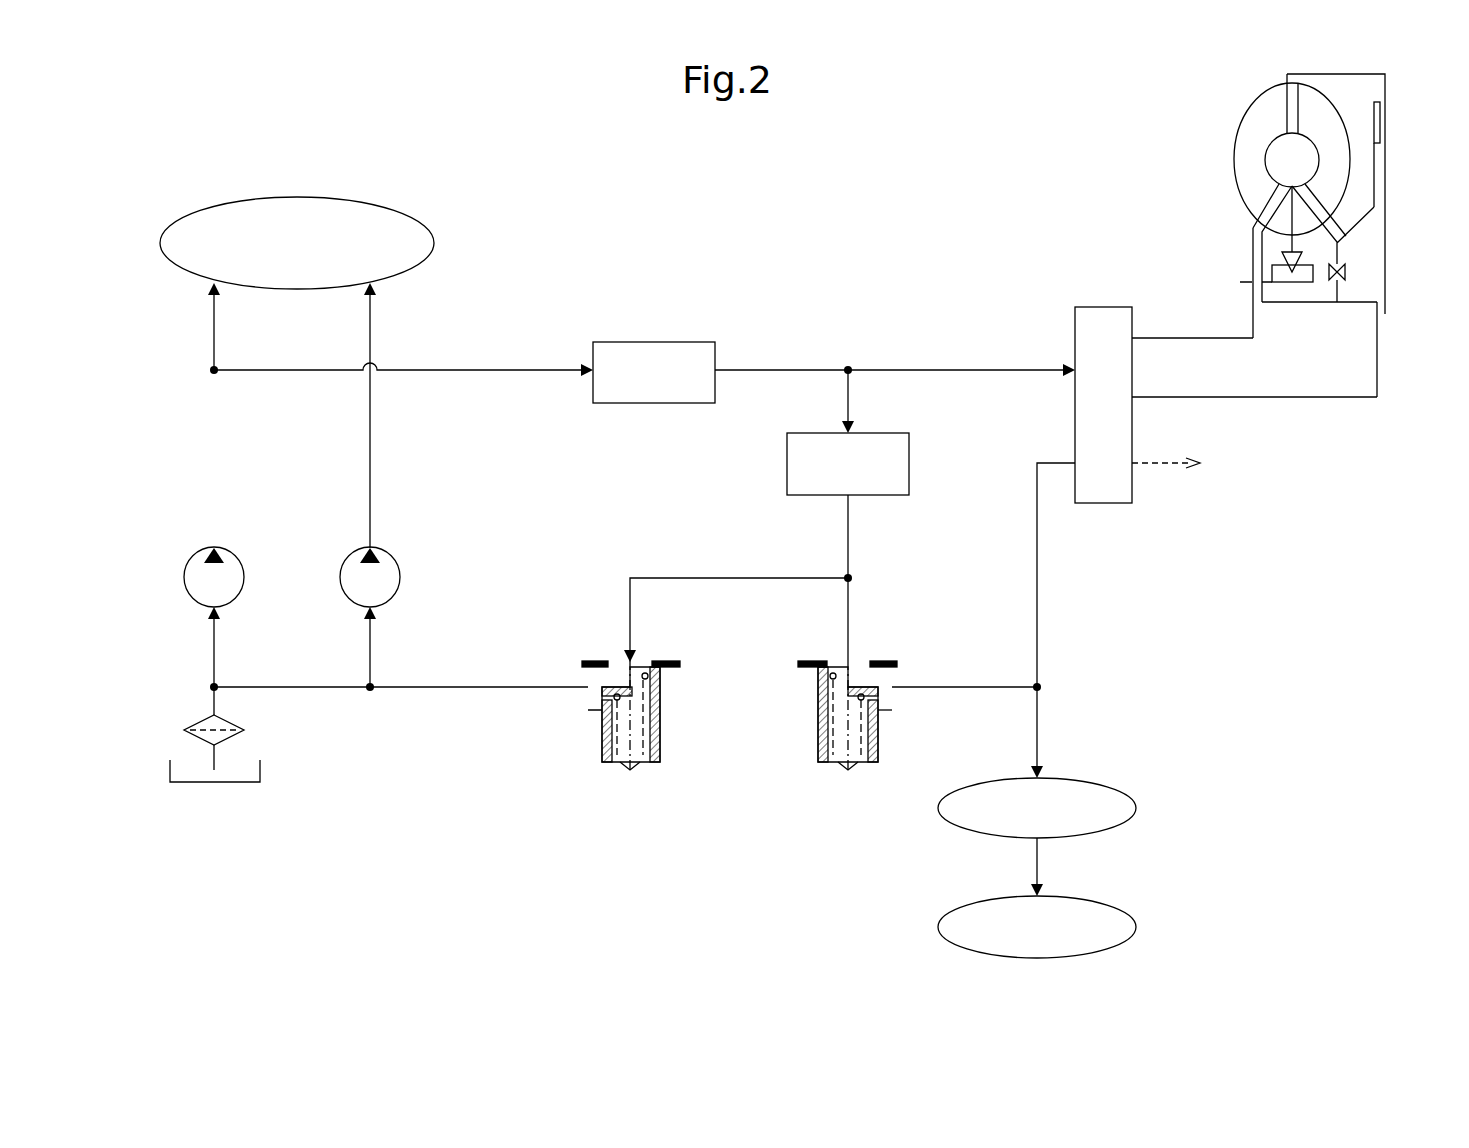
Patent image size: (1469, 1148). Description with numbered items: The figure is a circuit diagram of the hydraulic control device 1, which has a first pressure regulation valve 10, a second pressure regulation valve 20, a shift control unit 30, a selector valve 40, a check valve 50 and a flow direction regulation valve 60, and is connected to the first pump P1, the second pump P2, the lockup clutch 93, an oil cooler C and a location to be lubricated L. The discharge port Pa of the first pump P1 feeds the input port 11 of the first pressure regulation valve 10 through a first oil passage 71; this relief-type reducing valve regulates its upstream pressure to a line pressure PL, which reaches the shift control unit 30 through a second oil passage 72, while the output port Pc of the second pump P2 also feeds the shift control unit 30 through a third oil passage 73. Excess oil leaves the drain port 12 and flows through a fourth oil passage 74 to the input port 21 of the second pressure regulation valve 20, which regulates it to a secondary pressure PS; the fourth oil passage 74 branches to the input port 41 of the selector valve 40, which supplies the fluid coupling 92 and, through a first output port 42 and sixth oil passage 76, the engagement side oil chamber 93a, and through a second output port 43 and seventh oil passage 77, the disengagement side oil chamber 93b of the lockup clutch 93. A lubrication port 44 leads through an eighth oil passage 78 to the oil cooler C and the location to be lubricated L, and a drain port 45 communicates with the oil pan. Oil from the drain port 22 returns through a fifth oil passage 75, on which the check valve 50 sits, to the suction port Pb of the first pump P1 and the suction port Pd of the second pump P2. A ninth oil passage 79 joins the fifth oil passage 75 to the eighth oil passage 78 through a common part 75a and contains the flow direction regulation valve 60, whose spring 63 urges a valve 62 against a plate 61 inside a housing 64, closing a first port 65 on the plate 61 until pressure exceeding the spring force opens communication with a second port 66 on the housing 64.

The hydraulic control device 1 is at (163, 118).
The first pressure regulation valve 10 is at (654, 342).
The input port 11 is at (590, 372).
The drain port 12 is at (716, 372).
The second pressure regulation valve 20 is at (910, 462).
The input port 21 is at (852, 432).
The drain port 22 is at (848, 497).
The shift control unit 30 is at (340, 200).
The selector valve 40 is at (1105, 307).
The input port 41 is at (1073, 368).
The first output port 42 is at (1134, 336).
The second output port 43 is at (1134, 399).
The lubrication port 44 is at (1074, 463).
The drain port 45 is at (1134, 472).
The check valve 50 is at (610, 765).
The flow direction regulation valve 60 is at (835, 775).
The plate 61 is at (880, 660).
The valve 62 is at (818, 710).
The spring 63 is at (818, 748).
The housing 64 is at (868, 768).
The first port 65 is at (843, 660).
The second port 66 is at (892, 700).
The first oil passage 71 is at (300, 372).
The second oil passage 72 is at (214, 335).
The third oil passage 73 is at (372, 462).
The fourth oil passage 74 is at (885, 370).
The fifth oil passage 75 is at (647, 578).
The part of the fifth oil passage 75a is at (848, 535).
The sixth oil passage 76 is at (1225, 340).
The seventh oil passage 77 is at (1290, 398).
The eighth oil passage 78 is at (1040, 603).
The ninth oil passage 79 is at (943, 687).
The fluid coupling 92 is at (1218, 135).
The lockup clutch 93 is at (1313, 176).
The engagement side oil chamber 93a is at (1357, 115).
The disengagement side oil chamber 93b is at (1370, 234).
The first pump P1 is at (185, 578).
The second pump P2 is at (400, 577).
The discharge port Pa is at (212, 546).
The suction port Pb is at (212, 608).
The output port Pc is at (368, 546).
The suction port Pd is at (368, 608).
The line pressure PL is at (239, 356).
The secondary pressure PS is at (964, 353).
The oil cooler C is at (1136, 808).
The location to be lubricated L is at (1136, 927).